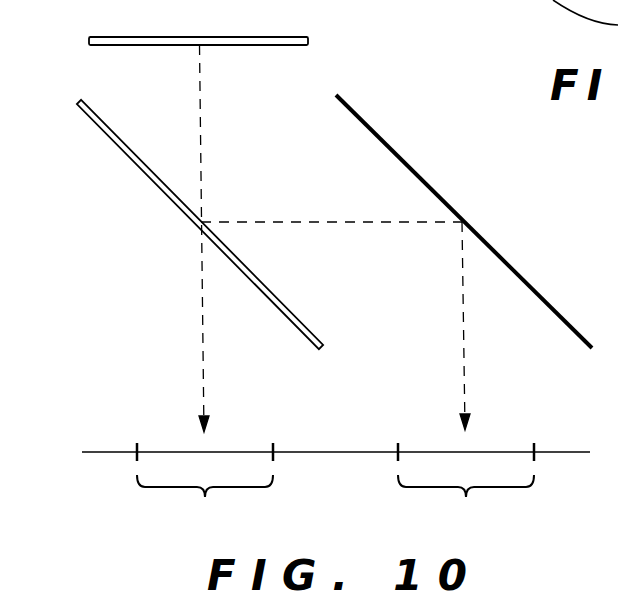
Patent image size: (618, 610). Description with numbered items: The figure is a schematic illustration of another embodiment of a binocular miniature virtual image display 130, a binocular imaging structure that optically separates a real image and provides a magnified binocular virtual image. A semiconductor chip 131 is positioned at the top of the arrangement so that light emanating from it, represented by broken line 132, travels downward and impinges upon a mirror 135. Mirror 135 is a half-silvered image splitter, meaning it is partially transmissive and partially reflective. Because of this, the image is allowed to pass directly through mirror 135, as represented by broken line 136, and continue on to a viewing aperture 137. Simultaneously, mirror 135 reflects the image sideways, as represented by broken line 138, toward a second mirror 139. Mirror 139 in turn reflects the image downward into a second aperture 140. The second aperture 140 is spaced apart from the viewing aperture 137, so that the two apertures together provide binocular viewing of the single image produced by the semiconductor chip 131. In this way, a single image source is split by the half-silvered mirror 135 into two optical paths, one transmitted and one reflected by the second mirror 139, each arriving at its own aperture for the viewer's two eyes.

The binocular miniature virtual image display 130 is at (63, 267).
The semiconductor chip 131 is at (250, 37).
The broken line 132 is at (201, 114).
The mirror 135 is at (281, 303).
The broken line 136 is at (201, 334).
The viewing aperture 137 is at (205, 487).
The broken line 138 is at (340, 222).
The second mirror 139 is at (543, 298).
The second aperture 140 is at (466, 376).